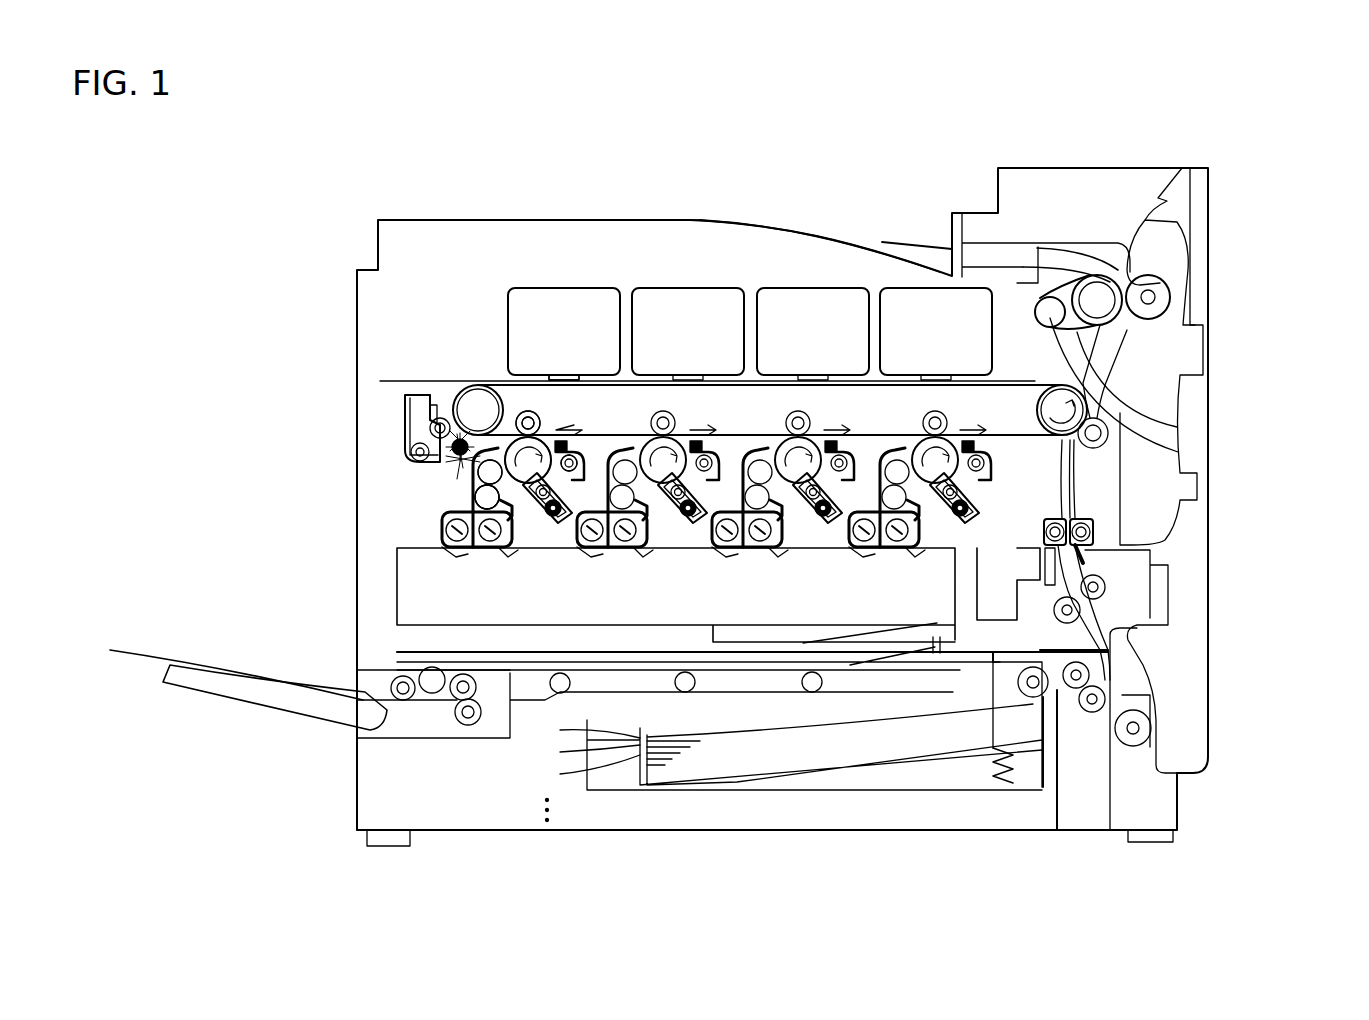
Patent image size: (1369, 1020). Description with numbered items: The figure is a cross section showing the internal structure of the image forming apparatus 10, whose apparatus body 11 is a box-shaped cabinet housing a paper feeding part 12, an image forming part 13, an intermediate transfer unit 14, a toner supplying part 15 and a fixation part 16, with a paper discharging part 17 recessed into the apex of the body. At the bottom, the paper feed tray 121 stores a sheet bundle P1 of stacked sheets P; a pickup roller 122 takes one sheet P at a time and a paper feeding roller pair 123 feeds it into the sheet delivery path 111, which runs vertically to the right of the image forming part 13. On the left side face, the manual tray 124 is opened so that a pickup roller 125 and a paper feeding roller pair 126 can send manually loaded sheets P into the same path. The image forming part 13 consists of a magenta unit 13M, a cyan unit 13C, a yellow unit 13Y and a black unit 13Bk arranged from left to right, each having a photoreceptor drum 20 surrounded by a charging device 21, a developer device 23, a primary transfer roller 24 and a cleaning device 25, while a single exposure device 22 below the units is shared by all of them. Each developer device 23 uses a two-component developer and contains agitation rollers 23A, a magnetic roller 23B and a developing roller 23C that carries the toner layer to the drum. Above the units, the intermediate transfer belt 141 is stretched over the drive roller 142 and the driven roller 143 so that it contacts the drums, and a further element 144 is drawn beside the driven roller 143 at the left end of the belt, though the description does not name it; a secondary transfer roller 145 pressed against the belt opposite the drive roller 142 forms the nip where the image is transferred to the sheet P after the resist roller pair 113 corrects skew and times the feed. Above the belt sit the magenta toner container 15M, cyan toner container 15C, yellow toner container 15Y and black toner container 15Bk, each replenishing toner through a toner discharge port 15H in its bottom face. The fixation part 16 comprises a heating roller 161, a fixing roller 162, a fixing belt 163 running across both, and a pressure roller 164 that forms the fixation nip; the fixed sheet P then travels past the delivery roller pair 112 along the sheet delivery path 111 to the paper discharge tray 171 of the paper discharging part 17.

The image forming apparatus 10 is at (405, 212).
The apparatus body 11 is at (357, 453).
The paper feeding part 12 is at (348, 784).
The image forming part 13 is at (390, 483).
The magenta unit 13M is at (515, 570).
The cyan unit 13C is at (645, 570).
The yellow unit 13Y is at (770, 570).
The black unit 13Bk is at (900, 570).
The intermediate transfer unit 14 is at (427, 385).
The toner supplying part 15 is at (485, 333).
The magenta toner container 15M is at (600, 346).
The cyan toner container 15C is at (720, 346).
The yellow toner container 15Y is at (842, 346).
The black toner container 15Bk is at (985, 346).
The toner discharge port 15H is at (565, 381).
The fixation part 16 is at (1302, 305).
The paper discharging part 17 is at (810, 215).
The photoreceptor drum 20 is at (478, 405).
The charging device 21 is at (528, 485).
The exposure device 22 is at (397, 595).
The developer device 23 is at (487, 497).
The agitation roller 23A is at (475, 550).
The magnetic roller 23B is at (487, 515).
The developing roller 23C is at (490, 470).
The primary transfer roller 24 is at (545, 420).
The cleaning device 25 is at (569, 472).
The sheet delivery path 111 is at (1078, 250).
The delivery roller pair 112 is at (1110, 587).
The resist roller pair 113 is at (1097, 524).
The paper feed tray 121 is at (690, 795).
The pickup roller 122 is at (1017, 680).
The paper feeding roller pair 123 is at (1093, 712).
The manual tray 124 is at (298, 717).
The pickup roller 125 is at (403, 687).
The paper feeding roller pair 126 is at (467, 722).
The intermediate transfer belt 141 is at (1015, 435).
The drive roller 142 is at (1037, 408).
The driven roller 143 is at (445, 387).
The belt cleaning unit 144 is at (405, 413).
The secondary transfer roller 145 is at (1108, 433).
The heating roller 161 is at (1100, 330).
The fixing roller 162 is at (1062, 318).
The fixing belt 163 is at (1085, 345).
The pressure roller 164 is at (1148, 297).
The paper discharge tray 171 is at (838, 237).
The sheet P is at (910, 247).
The sheet bundle P1 is at (540, 722).